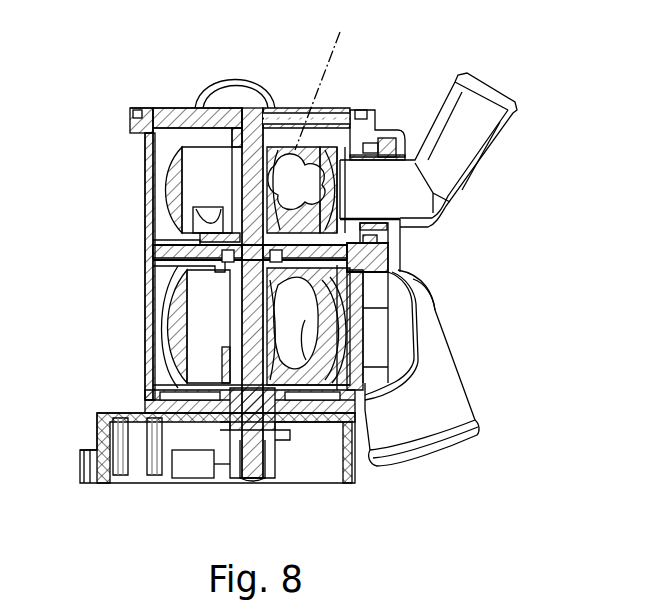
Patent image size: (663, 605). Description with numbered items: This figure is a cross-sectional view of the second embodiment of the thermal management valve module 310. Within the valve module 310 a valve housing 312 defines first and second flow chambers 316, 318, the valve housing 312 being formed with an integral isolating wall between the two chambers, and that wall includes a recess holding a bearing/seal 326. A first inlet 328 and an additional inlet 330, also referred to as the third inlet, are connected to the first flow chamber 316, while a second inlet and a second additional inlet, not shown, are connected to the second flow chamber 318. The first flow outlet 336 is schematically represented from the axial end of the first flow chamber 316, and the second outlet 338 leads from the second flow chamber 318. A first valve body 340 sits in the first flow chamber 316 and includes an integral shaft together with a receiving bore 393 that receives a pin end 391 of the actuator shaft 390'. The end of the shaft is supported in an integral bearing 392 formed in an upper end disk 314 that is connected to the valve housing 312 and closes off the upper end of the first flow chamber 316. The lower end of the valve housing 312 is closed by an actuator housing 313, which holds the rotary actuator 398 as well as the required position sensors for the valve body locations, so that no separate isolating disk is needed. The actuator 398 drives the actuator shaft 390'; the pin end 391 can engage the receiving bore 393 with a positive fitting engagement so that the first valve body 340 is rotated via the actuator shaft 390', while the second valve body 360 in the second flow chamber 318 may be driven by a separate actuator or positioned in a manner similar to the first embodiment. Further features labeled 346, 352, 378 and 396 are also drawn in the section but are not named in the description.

The thermal management valve module 310 is at (435, 284).
The valve housing 312 is at (142, 164).
The actuator housing 313 is at (95, 432).
The upper end disk 314 is at (166, 118).
The first flow chamber 316 is at (355, 150).
The second flow chamber 318 is at (200, 345).
The bearing/seal 326 is at (152, 270).
The first inlet 328 is at (228, 82).
The additional inlet 330 is at (520, 100).
The first flow outlet 336 is at (345, 48).
The second outlet 338 is at (470, 440).
The first valve body 340 is at (197, 210).
The lobed valve element 346 is at (300, 150).
The flange block 352 is at (392, 256).
The second valve body 360 is at (165, 333).
The valve seat 378 is at (310, 365).
The actuator shaft 390' is at (258, 489).
The pin end 391 is at (218, 266).
The integral bearing 392 is at (285, 118).
The receiving bore 393 is at (168, 214).
The bottom plate 396 is at (147, 392).
The rotary actuator 398 is at (201, 464).